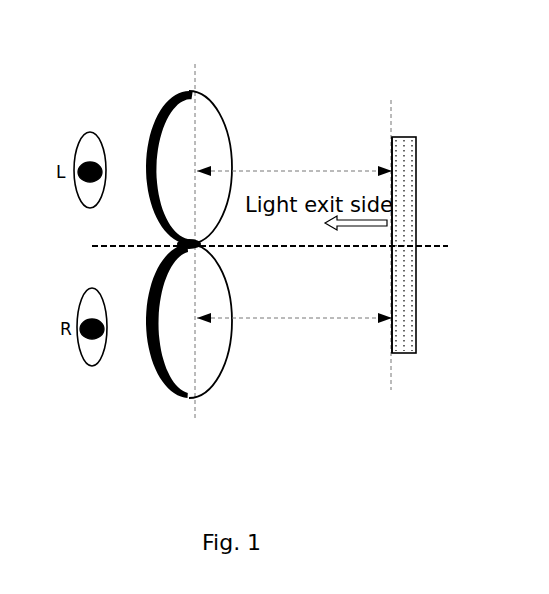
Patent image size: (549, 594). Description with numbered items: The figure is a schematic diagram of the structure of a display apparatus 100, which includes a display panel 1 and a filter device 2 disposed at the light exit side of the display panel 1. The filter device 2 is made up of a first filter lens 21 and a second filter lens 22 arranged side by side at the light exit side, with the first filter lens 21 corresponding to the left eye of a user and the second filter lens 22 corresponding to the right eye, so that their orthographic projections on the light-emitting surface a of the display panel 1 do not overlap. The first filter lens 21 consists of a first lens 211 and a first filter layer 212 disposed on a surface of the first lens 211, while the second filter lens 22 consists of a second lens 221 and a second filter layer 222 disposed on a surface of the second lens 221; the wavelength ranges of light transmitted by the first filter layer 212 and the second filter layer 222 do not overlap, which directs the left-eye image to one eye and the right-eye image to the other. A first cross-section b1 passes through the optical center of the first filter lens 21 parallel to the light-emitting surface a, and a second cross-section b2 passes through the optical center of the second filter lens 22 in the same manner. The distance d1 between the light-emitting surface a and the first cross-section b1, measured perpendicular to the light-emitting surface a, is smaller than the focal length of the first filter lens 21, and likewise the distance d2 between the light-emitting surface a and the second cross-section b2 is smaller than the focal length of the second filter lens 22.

The display apparatus 100 is at (281, 254).
The display panel 1 is at (392, 293).
The filter device 2 is at (212, 239).
The first filter lens 21 is at (204, 125).
The first lens 211 is at (226, 141).
The first filter layer 212 is at (165, 104).
The second filter lens 22 is at (202, 358).
The second lens 221 is at (226, 340).
The second filter layer 222 is at (161, 381).
The light-emitting surface a is at (392, 152).
The first cross-section b1 is at (198, 131).
The second cross-section b2 is at (198, 288).
The distance d1 is at (294, 163).
The distance d2 is at (294, 310).